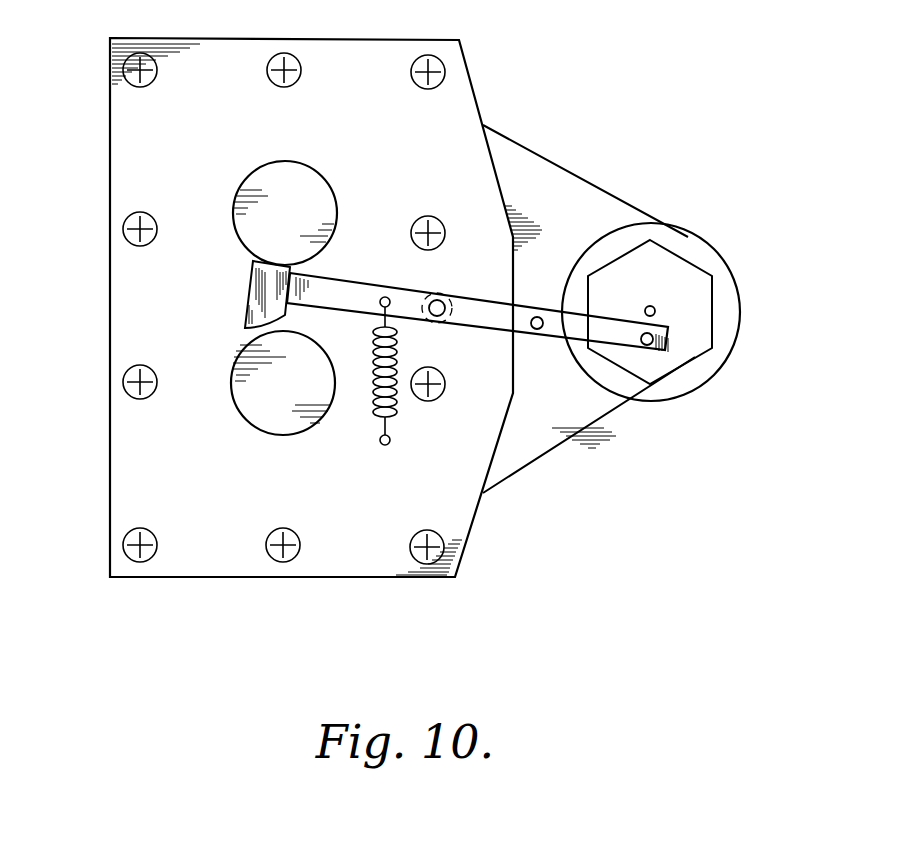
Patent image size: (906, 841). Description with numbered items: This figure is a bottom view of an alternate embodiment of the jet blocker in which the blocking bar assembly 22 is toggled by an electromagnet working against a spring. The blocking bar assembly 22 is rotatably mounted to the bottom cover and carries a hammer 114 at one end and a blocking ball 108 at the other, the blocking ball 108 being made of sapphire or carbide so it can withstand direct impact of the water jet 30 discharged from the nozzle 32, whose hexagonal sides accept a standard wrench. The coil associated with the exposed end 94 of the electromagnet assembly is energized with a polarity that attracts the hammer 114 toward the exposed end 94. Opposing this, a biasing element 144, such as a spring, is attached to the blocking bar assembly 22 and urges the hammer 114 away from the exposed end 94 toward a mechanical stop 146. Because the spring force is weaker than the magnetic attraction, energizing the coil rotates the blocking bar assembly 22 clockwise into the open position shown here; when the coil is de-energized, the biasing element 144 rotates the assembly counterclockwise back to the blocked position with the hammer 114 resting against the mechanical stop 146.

The blocking bar assembly 22 is at (530, 312).
The water jet 30 is at (656, 312).
The nozzle 32 is at (683, 260).
The exposed end 94 is at (234, 207).
The blocking ball 108 is at (652, 341).
The hammer 114 is at (252, 283).
The biasing element 144 is at (392, 422).
The mechanical stop 146 is at (240, 400).